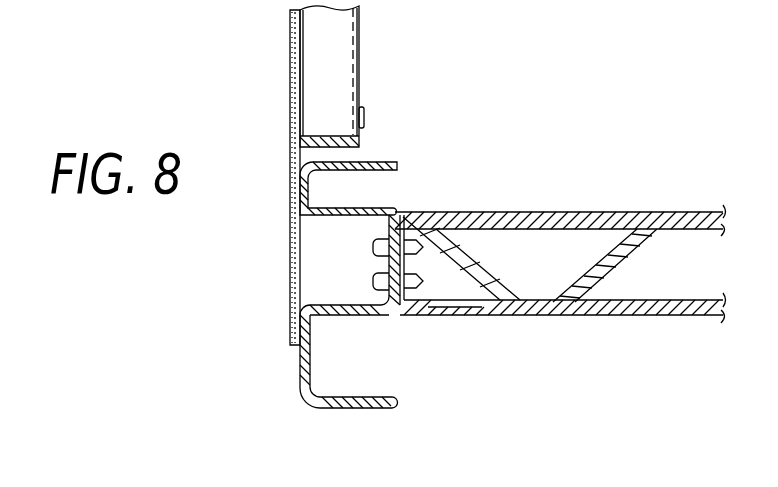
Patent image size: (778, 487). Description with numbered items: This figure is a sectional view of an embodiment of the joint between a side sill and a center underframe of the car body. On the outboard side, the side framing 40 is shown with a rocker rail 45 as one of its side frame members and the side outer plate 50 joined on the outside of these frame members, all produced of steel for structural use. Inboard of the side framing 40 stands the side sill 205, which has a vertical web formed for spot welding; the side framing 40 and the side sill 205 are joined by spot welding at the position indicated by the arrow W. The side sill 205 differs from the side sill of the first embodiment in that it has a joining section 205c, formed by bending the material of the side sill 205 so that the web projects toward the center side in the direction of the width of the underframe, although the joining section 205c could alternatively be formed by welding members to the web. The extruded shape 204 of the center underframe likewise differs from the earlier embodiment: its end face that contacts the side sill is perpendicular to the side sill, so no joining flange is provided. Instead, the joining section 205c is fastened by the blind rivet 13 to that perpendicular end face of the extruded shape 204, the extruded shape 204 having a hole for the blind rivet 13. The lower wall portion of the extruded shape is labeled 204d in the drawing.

The side outer plate 50 is at (290, 57).
The rocker rail 45 is at (364, 120).
The side sill 205 is at (302, 160).
The side framing 40 is at (289, 252).
The arrow W is at (289, 325).
The blind rivet 13 is at (380, 278).
The joining section 205c is at (394, 213).
The extruded shape 204 is at (588, 212).
The bottom wall portion of panel 204d is at (463, 303).